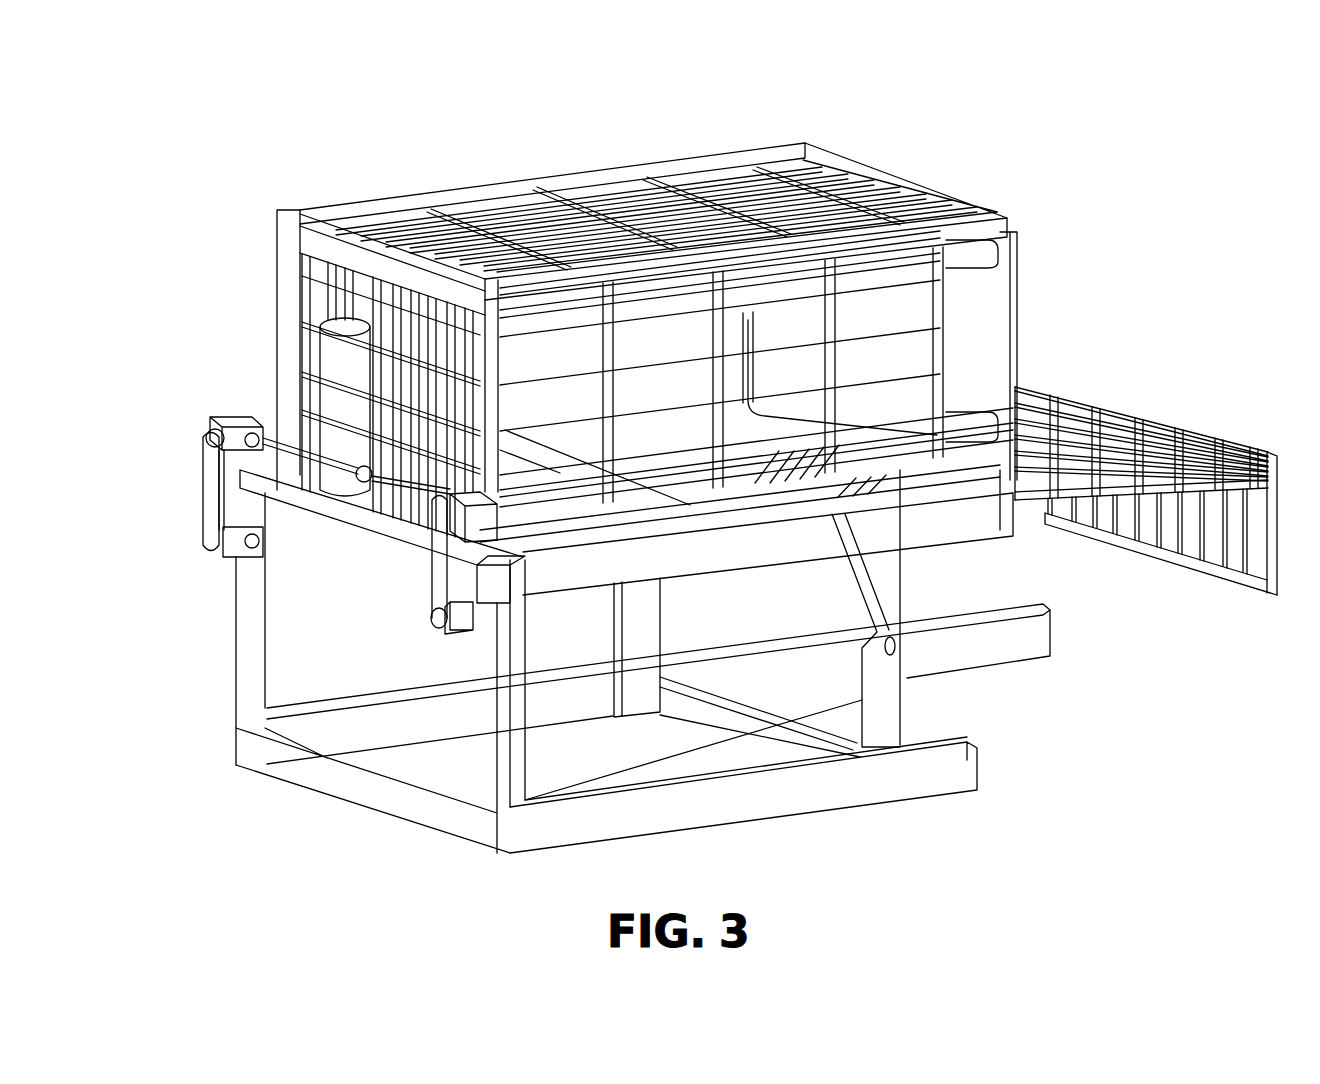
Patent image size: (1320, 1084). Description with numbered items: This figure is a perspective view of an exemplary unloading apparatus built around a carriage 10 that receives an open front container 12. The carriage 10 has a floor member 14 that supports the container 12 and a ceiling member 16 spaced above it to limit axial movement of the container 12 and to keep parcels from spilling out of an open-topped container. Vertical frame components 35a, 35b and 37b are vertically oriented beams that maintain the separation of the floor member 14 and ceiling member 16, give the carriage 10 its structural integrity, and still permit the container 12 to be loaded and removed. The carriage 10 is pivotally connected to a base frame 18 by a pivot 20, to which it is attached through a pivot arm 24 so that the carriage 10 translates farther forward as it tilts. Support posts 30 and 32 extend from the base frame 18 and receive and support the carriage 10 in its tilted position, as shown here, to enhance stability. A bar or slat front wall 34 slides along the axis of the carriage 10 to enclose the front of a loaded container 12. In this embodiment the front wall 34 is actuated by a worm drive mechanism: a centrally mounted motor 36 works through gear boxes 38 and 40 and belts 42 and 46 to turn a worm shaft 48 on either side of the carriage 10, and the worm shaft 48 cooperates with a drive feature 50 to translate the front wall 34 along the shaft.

The carriage 10 is at (752, 106).
The open front container 12 is at (902, 362).
The floor member 14 is at (1017, 342).
The ceiling member 16 is at (318, 295).
The base frame 18 is at (977, 768).
The pivot 20 is at (1000, 664).
The pivot arm 24 is at (906, 590).
The support post 30 is at (493, 763).
The support post 32 is at (240, 586).
The front wall 34 is at (1140, 412).
The vertical frame component 35a is at (633, 557).
The vertical frame component 35b is at (877, 240).
The motor 36 is at (353, 202).
The vertical frame component 37b is at (522, 196).
The gear box 38 is at (531, 623).
The gear box 40 is at (226, 420).
The belt 42 is at (432, 576).
The belt 46 is at (210, 498).
The worm shaft 48 is at (747, 578).
The drive feature 50 is at (315, 540).